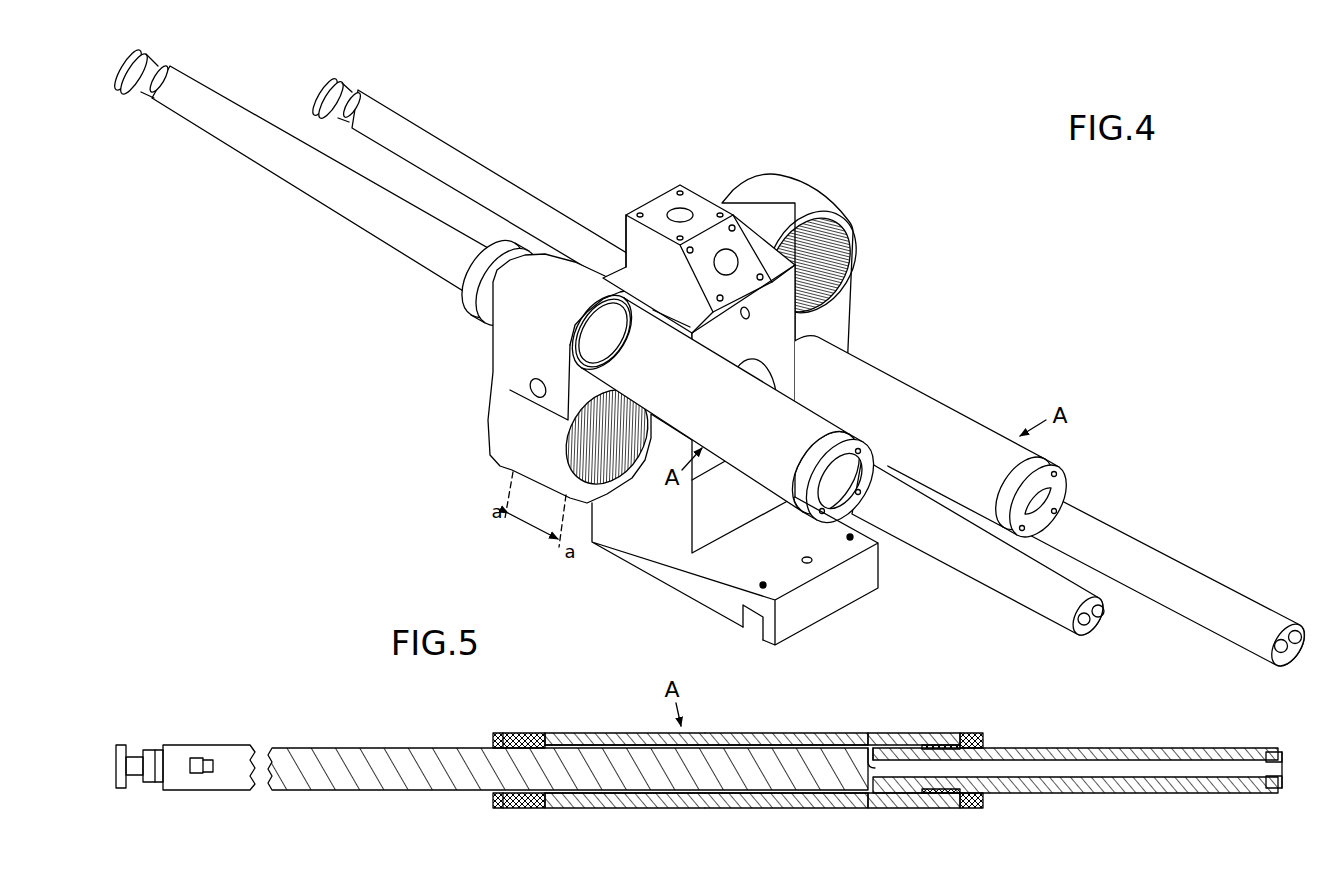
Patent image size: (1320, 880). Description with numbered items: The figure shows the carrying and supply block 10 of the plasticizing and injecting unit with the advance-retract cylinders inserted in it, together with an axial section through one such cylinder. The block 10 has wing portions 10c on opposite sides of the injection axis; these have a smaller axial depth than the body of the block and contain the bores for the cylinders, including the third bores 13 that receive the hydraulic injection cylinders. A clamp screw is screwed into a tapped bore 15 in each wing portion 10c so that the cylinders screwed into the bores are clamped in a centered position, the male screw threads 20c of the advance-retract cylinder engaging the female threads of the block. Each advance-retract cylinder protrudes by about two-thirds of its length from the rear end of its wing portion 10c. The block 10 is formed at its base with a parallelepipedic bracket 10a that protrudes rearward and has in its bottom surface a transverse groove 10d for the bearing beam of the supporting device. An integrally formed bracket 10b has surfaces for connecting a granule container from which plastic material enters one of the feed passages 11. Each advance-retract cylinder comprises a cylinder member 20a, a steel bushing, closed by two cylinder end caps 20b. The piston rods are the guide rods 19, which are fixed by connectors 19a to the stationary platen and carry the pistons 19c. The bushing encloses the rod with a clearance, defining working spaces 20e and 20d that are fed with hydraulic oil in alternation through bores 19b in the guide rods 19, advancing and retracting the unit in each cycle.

In FIG. 4, the carrying and supply block 10 is at (731, 385).
In FIG. 4, the parallelepipedic bracket 10a is at (832, 598).
In FIG. 4, the bracket 10b is at (678, 221).
In FIG. 4, the wing portions 10c is at (556, 305).
In FIG. 4, the transverse groove 10d is at (762, 622).
In FIG. 4, the feed passages 11 is at (710, 215).
In FIG. 4, the third bores 13 is at (583, 442).
In FIG. 4, the tapped bore 15 is at (538, 379).
In FIG. 4, the guide rods 19 is at (360, 197).
In FIG. 5, the guide rods 19 is at (358, 738).
In FIG. 4, the connectors 19a is at (345, 97).
In FIG. 5, the connectors 19a is at (125, 745).
In FIG. 4, the bores 19b is at (1105, 635).
In FIG. 5, the bores 19b is at (1132, 778).
In FIG. 5, the pistons 19c is at (878, 748).
In FIG. 4, the cylinder member 20a is at (661, 392).
In FIG. 5, the cylinder member 20a is at (797, 732).
In FIG. 4, the cylinder end caps 20b is at (480, 265).
In FIG. 5, the cylinder end caps 20b is at (505, 733).
In FIG. 4, the male screw threads 20c is at (590, 330).
In FIG. 5, the male screw threads 20c is at (597, 732).
In FIG. 5, the working space 20d is at (905, 743).
In FIG. 5, the working space 20e is at (717, 743).